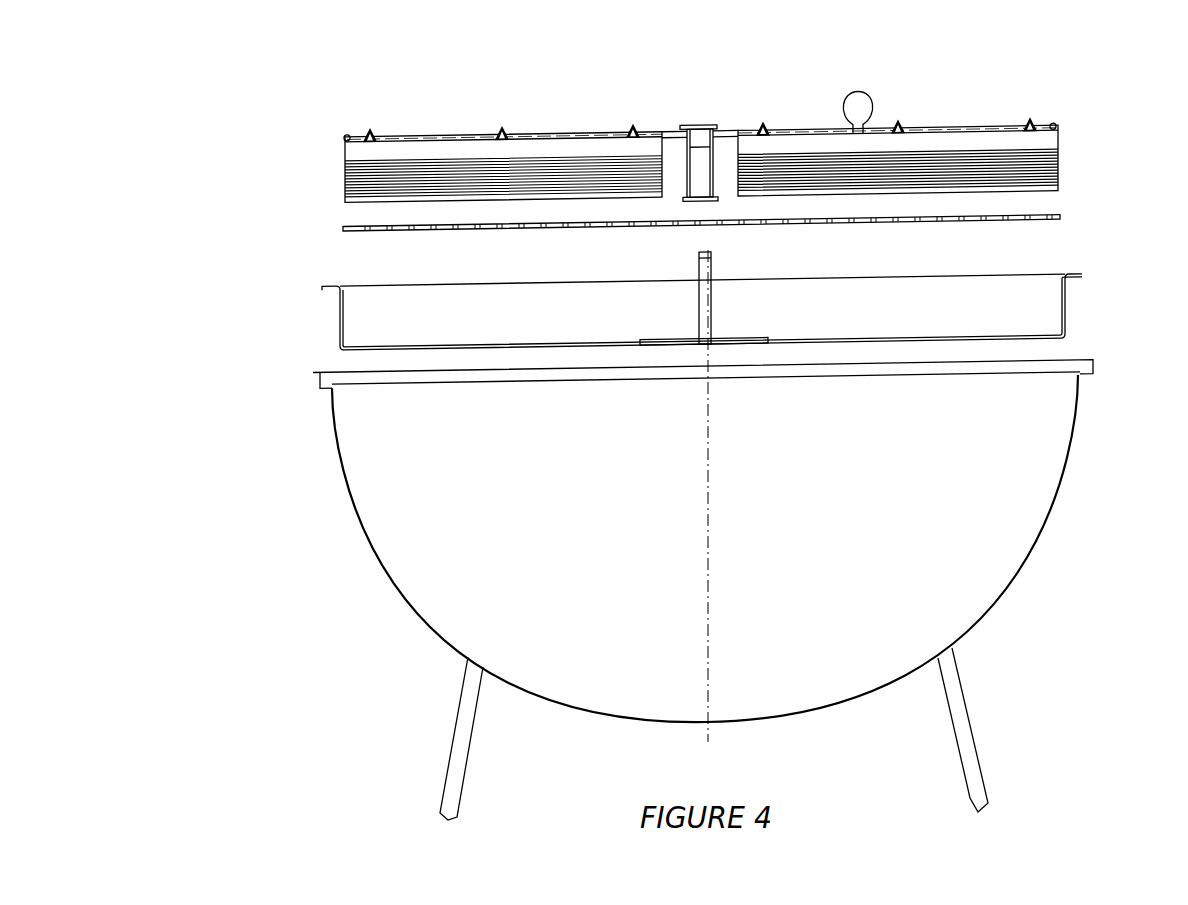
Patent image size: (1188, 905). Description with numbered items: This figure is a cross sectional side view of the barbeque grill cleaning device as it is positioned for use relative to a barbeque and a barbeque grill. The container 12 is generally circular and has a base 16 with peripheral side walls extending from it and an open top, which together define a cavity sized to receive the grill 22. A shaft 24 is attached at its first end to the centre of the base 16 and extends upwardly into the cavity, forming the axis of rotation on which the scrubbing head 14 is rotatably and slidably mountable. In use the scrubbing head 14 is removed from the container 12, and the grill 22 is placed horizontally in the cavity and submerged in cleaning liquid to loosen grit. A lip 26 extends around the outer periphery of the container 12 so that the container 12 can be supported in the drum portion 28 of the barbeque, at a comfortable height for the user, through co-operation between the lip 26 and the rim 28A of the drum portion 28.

The container 12 is at (340, 317).
The scrubbing head 14 is at (955, 131).
The base 16 is at (497, 350).
The barbeque grill 22 is at (343, 224).
The shaft 24 is at (712, 268).
The lip 26 is at (1080, 272).
The drum portion 28 is at (997, 548).
The rim 28A is at (1092, 362).